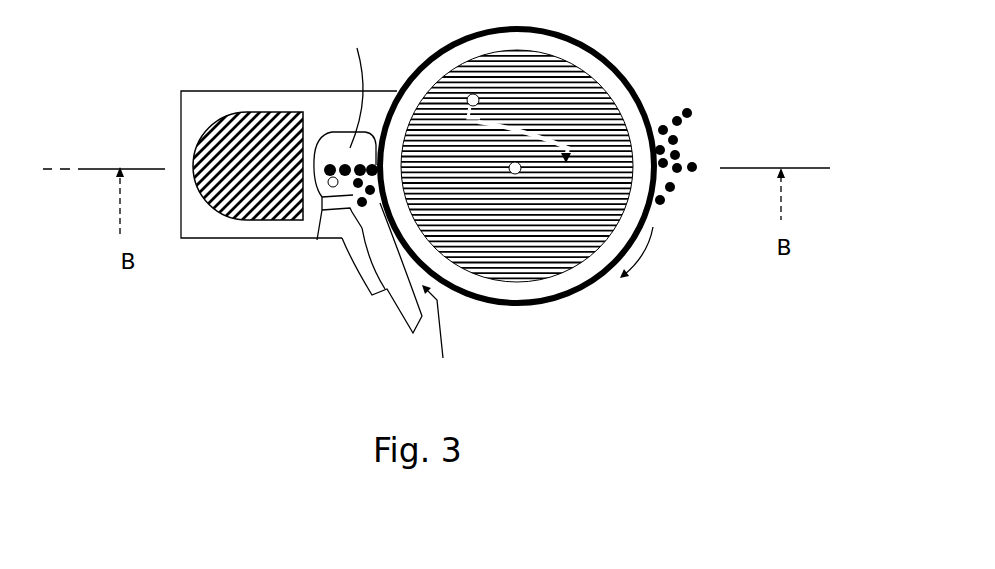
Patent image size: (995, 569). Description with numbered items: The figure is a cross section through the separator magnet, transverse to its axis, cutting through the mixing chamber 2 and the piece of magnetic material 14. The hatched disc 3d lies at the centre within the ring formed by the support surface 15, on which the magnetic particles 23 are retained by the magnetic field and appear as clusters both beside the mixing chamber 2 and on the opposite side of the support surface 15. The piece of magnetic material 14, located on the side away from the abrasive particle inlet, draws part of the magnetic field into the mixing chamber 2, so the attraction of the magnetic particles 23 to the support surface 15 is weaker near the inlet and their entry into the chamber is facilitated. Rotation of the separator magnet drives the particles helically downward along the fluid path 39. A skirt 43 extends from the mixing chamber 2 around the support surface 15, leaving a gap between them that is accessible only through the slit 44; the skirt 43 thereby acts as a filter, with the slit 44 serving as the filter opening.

The mixing chamber 2 is at (358, 81).
The permanent magnet disc 3d is at (554, 244).
The piece of magnetic material 14 is at (233, 207).
The support surface 15 is at (585, 292).
The magnetic particles 23 is at (330, 218).
The fluid path 39 is at (652, 250).
The skirt 43 is at (372, 300).
The slit 44 is at (437, 339).